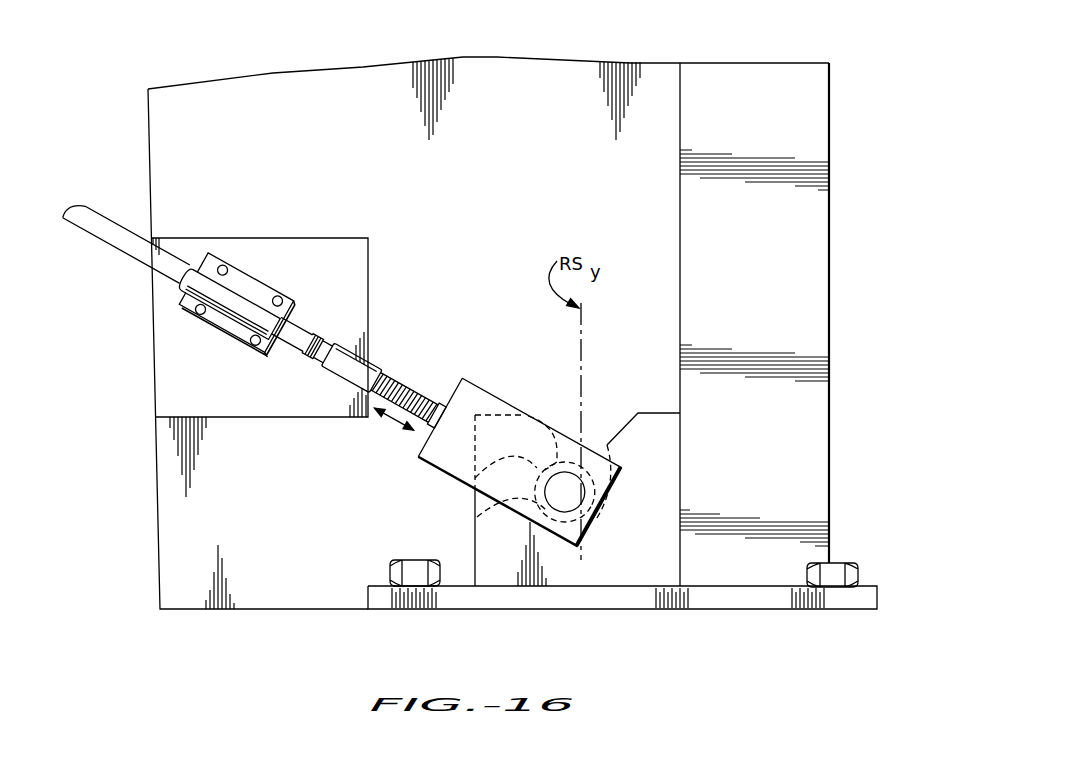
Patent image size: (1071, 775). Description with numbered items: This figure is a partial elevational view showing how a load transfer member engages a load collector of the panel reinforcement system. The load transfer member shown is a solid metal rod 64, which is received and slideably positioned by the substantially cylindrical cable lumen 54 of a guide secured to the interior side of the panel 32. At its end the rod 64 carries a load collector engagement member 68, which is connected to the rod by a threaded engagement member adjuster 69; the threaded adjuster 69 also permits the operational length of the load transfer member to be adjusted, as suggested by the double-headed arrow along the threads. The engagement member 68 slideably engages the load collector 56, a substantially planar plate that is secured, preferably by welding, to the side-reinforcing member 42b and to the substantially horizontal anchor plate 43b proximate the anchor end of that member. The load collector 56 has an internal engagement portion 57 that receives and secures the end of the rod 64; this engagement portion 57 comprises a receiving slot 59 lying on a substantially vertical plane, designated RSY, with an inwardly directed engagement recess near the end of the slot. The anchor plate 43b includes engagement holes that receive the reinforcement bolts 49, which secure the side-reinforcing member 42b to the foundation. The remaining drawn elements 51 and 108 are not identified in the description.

The panel 32 is at (529, 156).
The side-reinforcing member 42b is at (818, 248).
The anchor plate 43b is at (878, 612).
The reinforcement bolt 49 is at (845, 563).
The shaft 51 is at (302, 323).
The cable lumen 54 is at (222, 327).
The load collector 56 is at (664, 460).
The engagement portion 57 is at (470, 478).
The receiving slot 59 is at (606, 444).
The solid metal rod 64 is at (119, 251).
The load collector engagement member 68 is at (478, 386).
The threaded engagement member adjuster 69 is at (357, 360).
The cam 108 is at (478, 516).